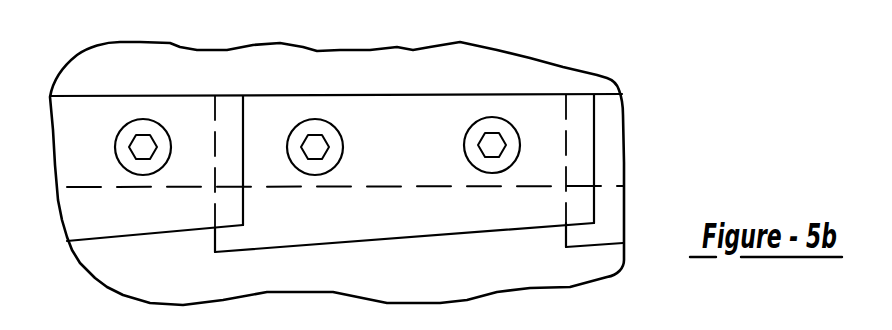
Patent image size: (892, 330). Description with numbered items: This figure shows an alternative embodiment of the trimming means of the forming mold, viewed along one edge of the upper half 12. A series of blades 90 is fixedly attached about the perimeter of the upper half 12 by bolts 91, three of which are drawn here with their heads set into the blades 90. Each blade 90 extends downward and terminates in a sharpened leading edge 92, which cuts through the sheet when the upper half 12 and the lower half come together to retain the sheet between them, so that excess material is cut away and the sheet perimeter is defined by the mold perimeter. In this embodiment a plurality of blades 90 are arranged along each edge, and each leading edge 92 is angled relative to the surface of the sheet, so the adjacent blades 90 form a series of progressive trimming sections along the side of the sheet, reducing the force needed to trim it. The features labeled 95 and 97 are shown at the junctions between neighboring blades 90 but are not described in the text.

The upper half 12 is at (292, 63).
The blade 90 is at (113, 122).
The bolt 91 is at (143, 147).
The sharpened leading edge 92 is at (106, 238).
The side edge 95 is at (582, 108).
The step 97 is at (215, 228).